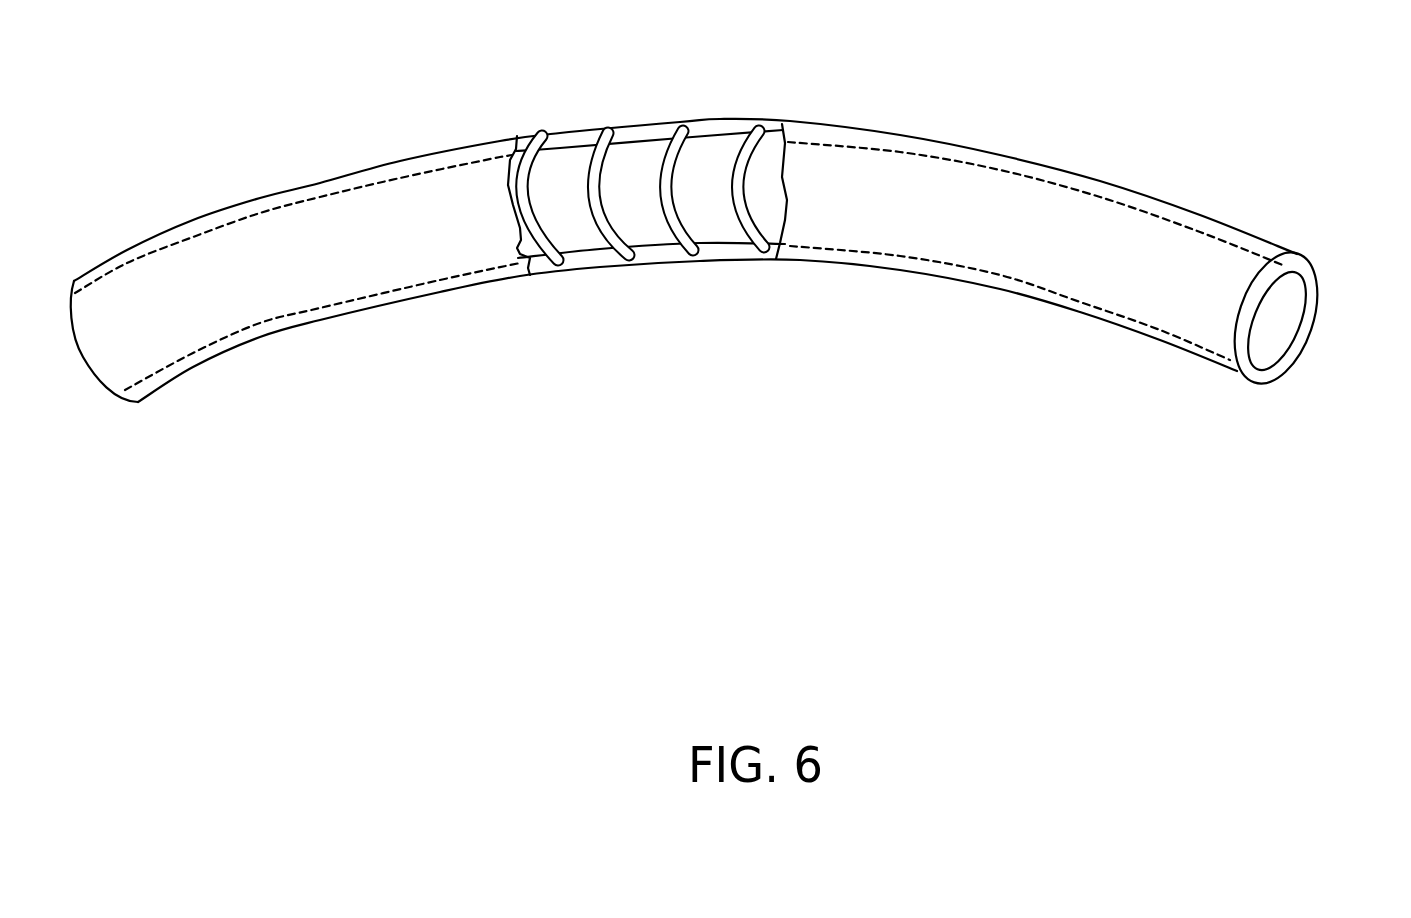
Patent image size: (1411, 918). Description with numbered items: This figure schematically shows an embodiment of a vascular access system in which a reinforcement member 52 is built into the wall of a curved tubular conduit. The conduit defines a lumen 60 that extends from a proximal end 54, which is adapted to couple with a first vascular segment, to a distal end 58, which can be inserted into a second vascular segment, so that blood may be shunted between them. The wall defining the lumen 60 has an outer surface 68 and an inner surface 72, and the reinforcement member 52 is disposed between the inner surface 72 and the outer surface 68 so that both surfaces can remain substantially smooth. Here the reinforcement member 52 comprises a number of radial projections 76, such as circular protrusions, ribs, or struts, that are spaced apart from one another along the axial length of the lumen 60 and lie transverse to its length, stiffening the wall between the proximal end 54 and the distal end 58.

The reinforcement member 52 is at (736, 221).
The proximal end 54 is at (152, 168).
The distal end 58 is at (1334, 166).
The lumen 60 is at (1274, 318).
The outer surface 68 is at (1065, 168).
The inner surface 72 is at (1108, 198).
The radial projections 76 is at (658, 168).